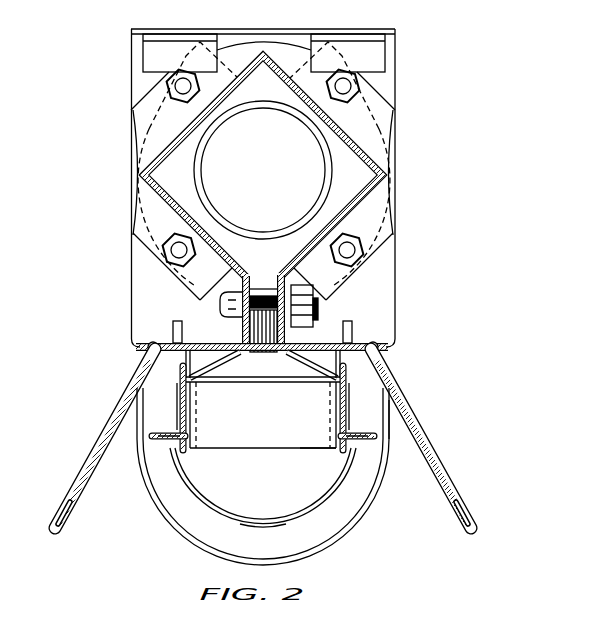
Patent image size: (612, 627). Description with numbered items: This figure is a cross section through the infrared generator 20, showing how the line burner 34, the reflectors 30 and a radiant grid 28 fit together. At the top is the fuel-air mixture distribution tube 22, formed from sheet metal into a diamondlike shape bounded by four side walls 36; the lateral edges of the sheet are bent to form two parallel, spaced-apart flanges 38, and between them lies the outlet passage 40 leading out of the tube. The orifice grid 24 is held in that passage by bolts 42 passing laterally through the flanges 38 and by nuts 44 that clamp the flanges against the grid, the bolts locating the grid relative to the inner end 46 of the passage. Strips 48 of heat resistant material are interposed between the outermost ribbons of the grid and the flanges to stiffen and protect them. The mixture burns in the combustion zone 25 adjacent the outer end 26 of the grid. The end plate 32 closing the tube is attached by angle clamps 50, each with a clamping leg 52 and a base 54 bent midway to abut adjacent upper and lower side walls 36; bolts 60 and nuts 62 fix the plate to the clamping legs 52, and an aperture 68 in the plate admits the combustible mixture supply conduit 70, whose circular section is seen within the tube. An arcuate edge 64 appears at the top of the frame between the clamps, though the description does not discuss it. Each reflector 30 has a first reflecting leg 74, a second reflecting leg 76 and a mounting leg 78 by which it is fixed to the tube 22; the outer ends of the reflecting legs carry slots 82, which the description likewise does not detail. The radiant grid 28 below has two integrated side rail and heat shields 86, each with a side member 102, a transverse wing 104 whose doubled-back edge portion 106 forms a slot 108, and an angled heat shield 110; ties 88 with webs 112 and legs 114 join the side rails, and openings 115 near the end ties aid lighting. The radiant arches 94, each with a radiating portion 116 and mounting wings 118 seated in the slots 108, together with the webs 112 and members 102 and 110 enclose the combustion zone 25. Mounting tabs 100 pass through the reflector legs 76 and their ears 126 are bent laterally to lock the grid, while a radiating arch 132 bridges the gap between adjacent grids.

The infrared generator 20 is at (127, 42).
The fuel-air mixture distribution tube 22 is at (362, 130).
The orifice grid 24 is at (252, 377).
The combustion zone 25 is at (270, 362).
The outer end of the grid 26 is at (260, 354).
The radiant grid 28 is at (305, 512).
The reflector 30 is at (108, 424).
The end plate 32 is at (133, 161).
The line burner 34 is at (148, 207).
The side wall 36 is at (178, 198).
The flange 38 is at (241, 320).
The outlet passage 40 is at (240, 268).
The bolt 42 is at (236, 304).
The nut 44 is at (312, 304).
The inner end of passage 46 is at (276, 266).
The strip of heat resistant material 48 is at (238, 340).
The angle clamp 50 is at (146, 141).
The clamping leg 52 is at (382, 98).
The base 54 is at (172, 98).
The bolt 60 is at (343, 72).
The nut 62 is at (355, 82).
The arcuate edge 64 is at (279, 45).
The aperture 68 is at (330, 192).
The combustible mixture supply conduit 70 is at (201, 194).
The first reflecting leg 74 is at (133, 398).
The second reflecting leg 76 is at (148, 349).
The mounting leg 78 is at (238, 272).
The slot 82 is at (92, 448).
The integrated side rail and heat shield 86 is at (186, 407).
The tie 88 is at (263, 442).
The radiant arch 94 is at (190, 492).
The mounting tab 100 is at (186, 383).
The side member 102 is at (192, 423).
The wing 104 is at (178, 432).
The edge portion 106 is at (179, 444).
The slot 108 is at (191, 446).
The heat shield 110 is at (222, 365).
The web 112 is at (311, 449).
The leg 114 is at (197, 405).
The opening 115 is at (320, 487).
The radiating portion 116 is at (296, 528).
The mounting wing 118 is at (170, 438).
The ear 126 is at (176, 321).
The radiating arch 132 is at (370, 525).